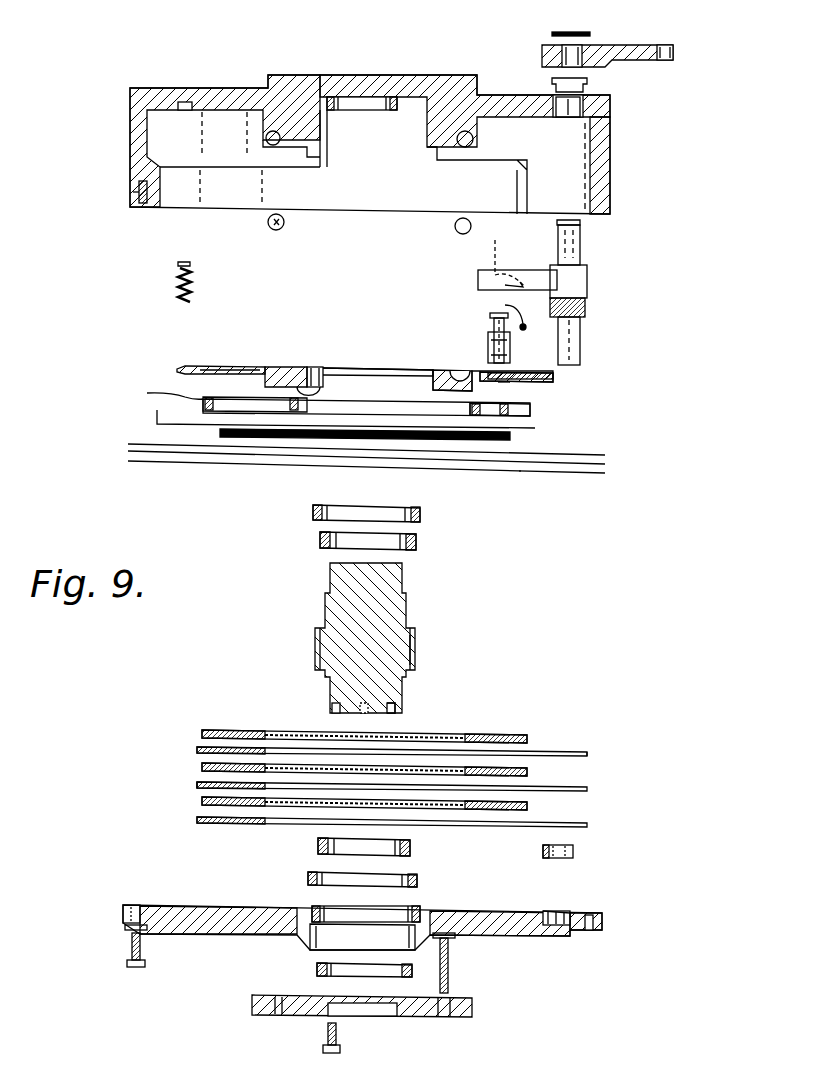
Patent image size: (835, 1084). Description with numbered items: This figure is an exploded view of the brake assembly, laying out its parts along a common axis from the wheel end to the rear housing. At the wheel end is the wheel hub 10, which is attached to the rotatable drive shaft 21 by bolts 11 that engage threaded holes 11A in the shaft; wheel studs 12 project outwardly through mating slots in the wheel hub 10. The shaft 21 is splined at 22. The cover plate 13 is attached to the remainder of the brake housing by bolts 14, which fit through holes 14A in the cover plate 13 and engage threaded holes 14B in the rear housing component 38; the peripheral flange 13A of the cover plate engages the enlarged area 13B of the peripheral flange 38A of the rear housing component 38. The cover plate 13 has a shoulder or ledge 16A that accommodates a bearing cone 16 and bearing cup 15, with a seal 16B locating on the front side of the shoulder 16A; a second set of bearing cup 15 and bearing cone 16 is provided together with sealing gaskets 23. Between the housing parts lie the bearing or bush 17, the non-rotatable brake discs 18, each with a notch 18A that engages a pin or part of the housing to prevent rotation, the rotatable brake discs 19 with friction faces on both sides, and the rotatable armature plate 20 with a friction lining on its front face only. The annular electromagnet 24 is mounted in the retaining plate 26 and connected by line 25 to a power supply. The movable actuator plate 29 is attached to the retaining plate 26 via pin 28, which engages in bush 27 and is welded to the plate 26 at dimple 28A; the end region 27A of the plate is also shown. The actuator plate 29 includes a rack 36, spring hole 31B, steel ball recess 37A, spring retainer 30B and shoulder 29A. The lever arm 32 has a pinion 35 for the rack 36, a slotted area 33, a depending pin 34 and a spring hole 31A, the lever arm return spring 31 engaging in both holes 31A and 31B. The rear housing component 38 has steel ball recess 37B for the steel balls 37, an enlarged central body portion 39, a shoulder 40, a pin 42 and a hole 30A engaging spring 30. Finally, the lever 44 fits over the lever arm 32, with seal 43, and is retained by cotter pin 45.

The wheel hub 10 is at (430, 1017).
The bolts 11 is at (323, 1040).
The threaded holes 11A is at (395, 712).
The wheel studs 12 is at (450, 970).
The cover plate 13 is at (545, 935).
The peripheral flange 13A is at (575, 912).
The enlarged area 13B is at (134, 190).
The bolts 14 is at (136, 968).
The threaded holes 14A is at (130, 905).
The threaded holes 14B is at (143, 205).
The bearing cup 15 is at (416, 542).
The bearing cone 16 is at (313, 510).
The shoulder or ledge 16A is at (330, 132).
The seal 16B is at (317, 970).
The bearing or bush 17 is at (573, 852).
The non-rotatable brake discs 18 is at (587, 825).
The notch 18A is at (612, 778).
The rotatable brake discs 19 is at (202, 801).
The rotatable armature plate 20 is at (247, 730).
The drive shaft 21 is at (392, 580).
The spline 22 is at (416, 650).
The sealing gaskets 23 is at (480, 455).
The annular electromagnet 24 is at (240, 440).
The line 25 is at (157, 415).
The retaining plate 26 is at (147, 393).
The bush 27 is at (488, 345).
The carrier disc end 27A is at (500, 412).
The pin 28 is at (492, 322).
The dimple 28A is at (520, 455).
The movable actuator plate 29 is at (330, 375).
The shoulder 29A is at (238, 370).
The spring 30 is at (175, 282).
The hole 30A is at (190, 102).
The spring retainer 30B is at (177, 370).
The lever arm return spring 31 is at (505, 305).
The spring hole 31A is at (505, 287).
The spring hole 31B is at (500, 382).
The lever arm 32 is at (575, 280).
The slotted area 33 is at (513, 253).
The depending pin 34 is at (572, 345).
The pinion 35 is at (585, 307).
The rack 36 is at (553, 378).
The steel balls 37 is at (274, 231).
The steel ball recess 37A is at (272, 367).
The steel ball recess 37B is at (275, 145).
The rear housing component 38 is at (375, 66).
The peripheral flange 38A is at (610, 160).
The enlarged central body portion 39 is at (452, 95).
The shoulder 40 is at (448, 148).
The pin 42 is at (575, 118).
The seal 43 is at (587, 86).
The lever 44 is at (650, 45).
The retaining cotter pin 45 is at (590, 34).